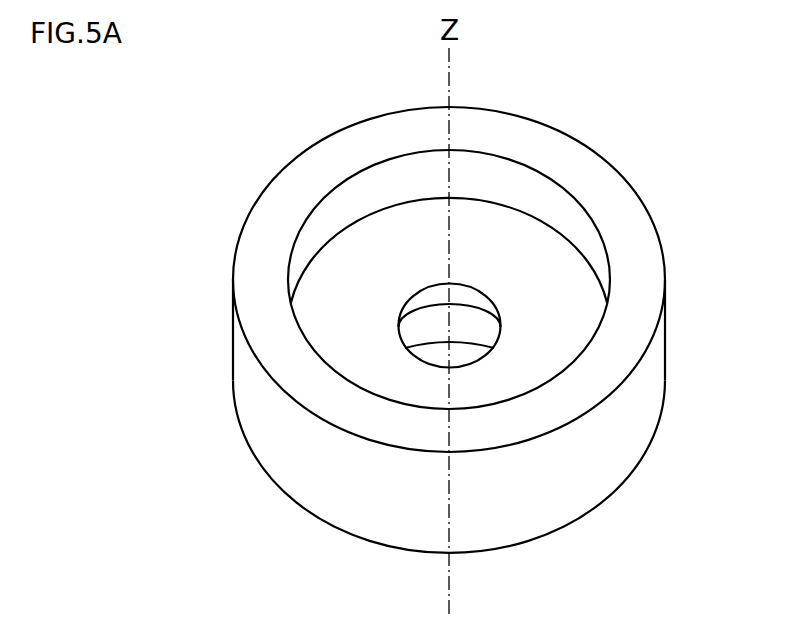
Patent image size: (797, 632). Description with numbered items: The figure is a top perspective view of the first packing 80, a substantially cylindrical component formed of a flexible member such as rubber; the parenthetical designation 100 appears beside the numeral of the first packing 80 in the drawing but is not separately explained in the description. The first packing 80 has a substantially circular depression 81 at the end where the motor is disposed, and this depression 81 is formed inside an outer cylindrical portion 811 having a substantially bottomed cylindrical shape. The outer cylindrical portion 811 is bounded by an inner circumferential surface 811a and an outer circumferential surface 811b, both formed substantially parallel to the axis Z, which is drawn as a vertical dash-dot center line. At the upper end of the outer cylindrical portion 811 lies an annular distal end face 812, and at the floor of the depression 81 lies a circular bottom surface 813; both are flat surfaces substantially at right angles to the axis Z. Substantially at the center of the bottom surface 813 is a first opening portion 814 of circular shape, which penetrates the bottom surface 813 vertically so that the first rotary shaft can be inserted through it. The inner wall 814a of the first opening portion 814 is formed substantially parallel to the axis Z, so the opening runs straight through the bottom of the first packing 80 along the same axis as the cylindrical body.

The first packing 80 is at (283, 137).
The rotary device 100 is at (455, 323).
The depression 81 is at (343, 300).
The outer cylindrical portion 811 is at (558, 450).
The inner circumferential surface 811a is at (483, 178).
The outer circumferential surface 811b is at (583, 435).
The annular distal end face 812 is at (600, 190).
The bottom surface 813 is at (500, 258).
The first opening portion 814 is at (500, 315).
The inner wall 814a is at (413, 303).